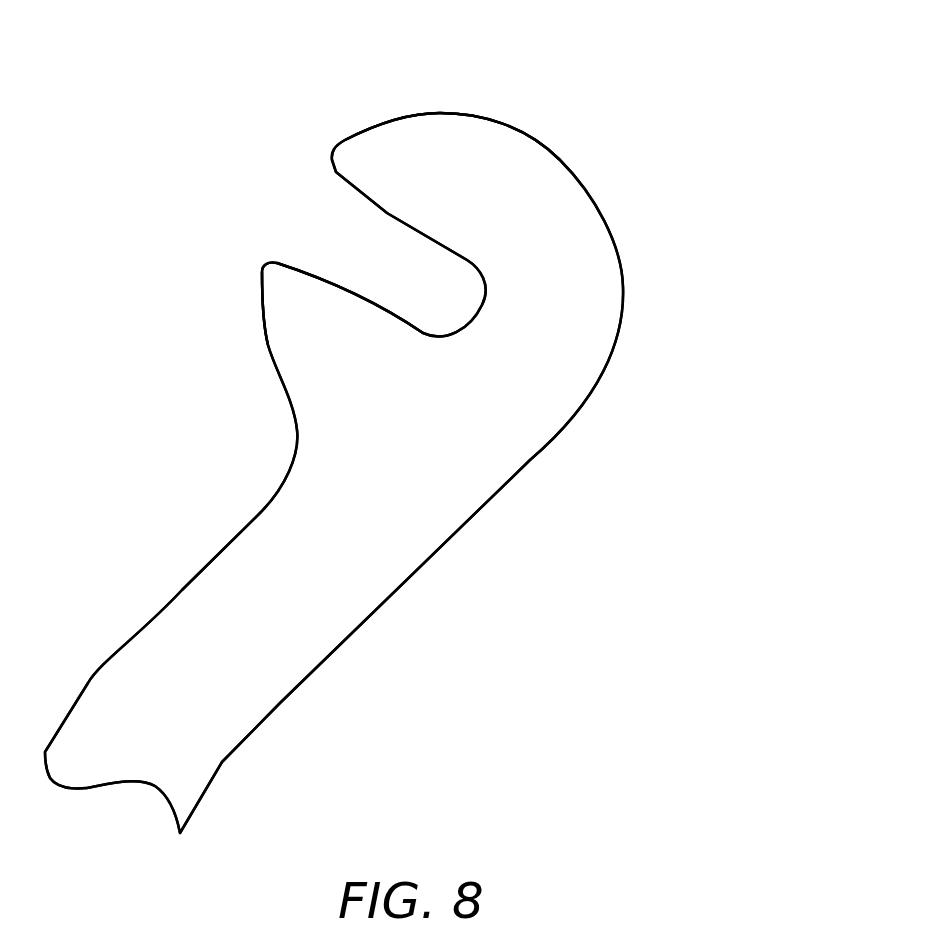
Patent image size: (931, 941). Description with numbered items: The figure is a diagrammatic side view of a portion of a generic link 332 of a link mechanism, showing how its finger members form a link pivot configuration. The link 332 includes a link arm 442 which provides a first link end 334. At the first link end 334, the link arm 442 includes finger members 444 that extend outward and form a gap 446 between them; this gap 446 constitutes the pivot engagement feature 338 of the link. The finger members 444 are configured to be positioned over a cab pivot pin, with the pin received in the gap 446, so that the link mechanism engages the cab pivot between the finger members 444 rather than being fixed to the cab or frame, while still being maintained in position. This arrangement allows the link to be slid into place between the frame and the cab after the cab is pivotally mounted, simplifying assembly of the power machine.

The link 332 is at (682, 246).
The first link end 334 is at (522, 128).
The pivot engagement feature 338 is at (472, 311).
The link arm 442 is at (282, 620).
The finger member 444 is at (443, 150).
The gap 446 is at (350, 270).